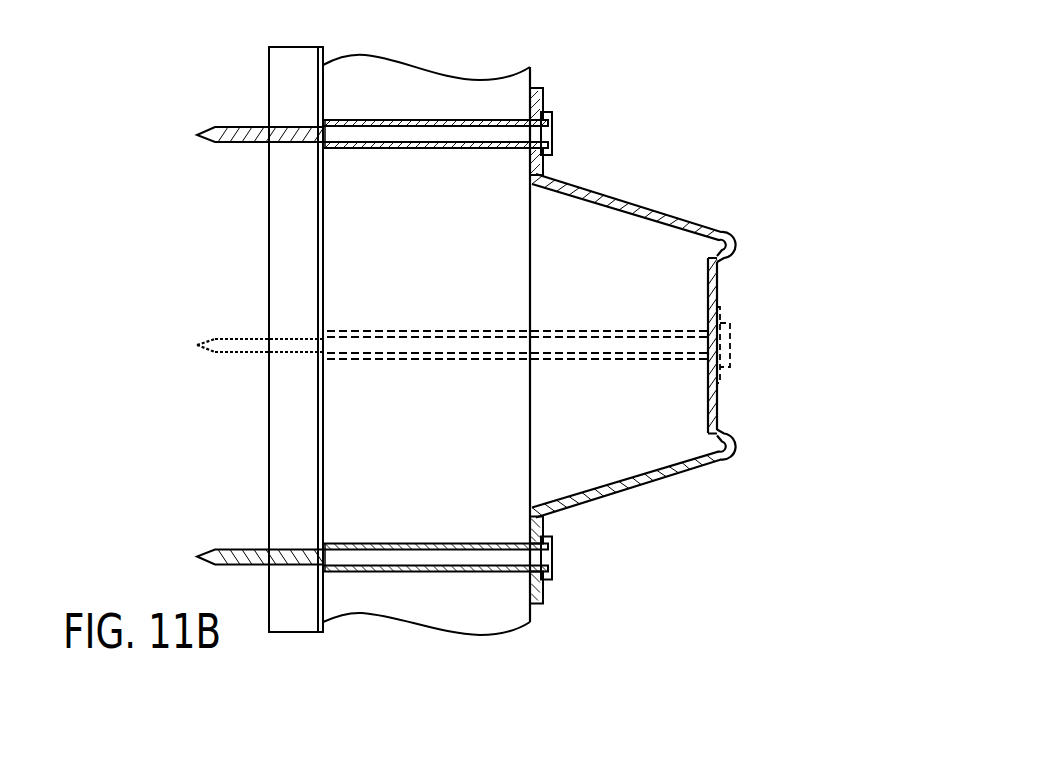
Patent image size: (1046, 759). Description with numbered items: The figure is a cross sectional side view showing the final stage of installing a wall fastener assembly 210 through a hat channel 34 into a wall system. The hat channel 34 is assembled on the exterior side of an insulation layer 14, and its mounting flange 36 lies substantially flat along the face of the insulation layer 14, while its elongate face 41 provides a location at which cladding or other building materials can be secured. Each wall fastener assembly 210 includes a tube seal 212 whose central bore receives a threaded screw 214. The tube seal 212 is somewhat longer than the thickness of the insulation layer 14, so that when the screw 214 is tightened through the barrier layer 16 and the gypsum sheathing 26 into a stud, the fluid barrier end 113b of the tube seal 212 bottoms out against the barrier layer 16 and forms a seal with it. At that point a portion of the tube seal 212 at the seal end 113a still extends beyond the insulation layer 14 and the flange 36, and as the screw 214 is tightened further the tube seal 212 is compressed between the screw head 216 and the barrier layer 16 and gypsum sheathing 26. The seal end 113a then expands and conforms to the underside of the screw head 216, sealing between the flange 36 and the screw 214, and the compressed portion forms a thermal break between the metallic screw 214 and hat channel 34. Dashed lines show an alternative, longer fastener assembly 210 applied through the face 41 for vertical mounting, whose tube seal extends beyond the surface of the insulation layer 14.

The insulation layer 14 is at (508, 428).
The barrier layer 16 is at (323, 52).
The gypsum sheathing 26 is at (283, 252).
The hat channel 34 is at (717, 400).
The mounting flange 36 is at (533, 88).
The elongate face 41 is at (717, 282).
The seal end 113a is at (547, 102).
The fluid barrier end 113b is at (327, 117).
The wall fastener assembly 210 is at (597, 60).
The tube seal 212 is at (440, 148).
The screw 214 is at (243, 142).
The screw head 216 is at (552, 135).